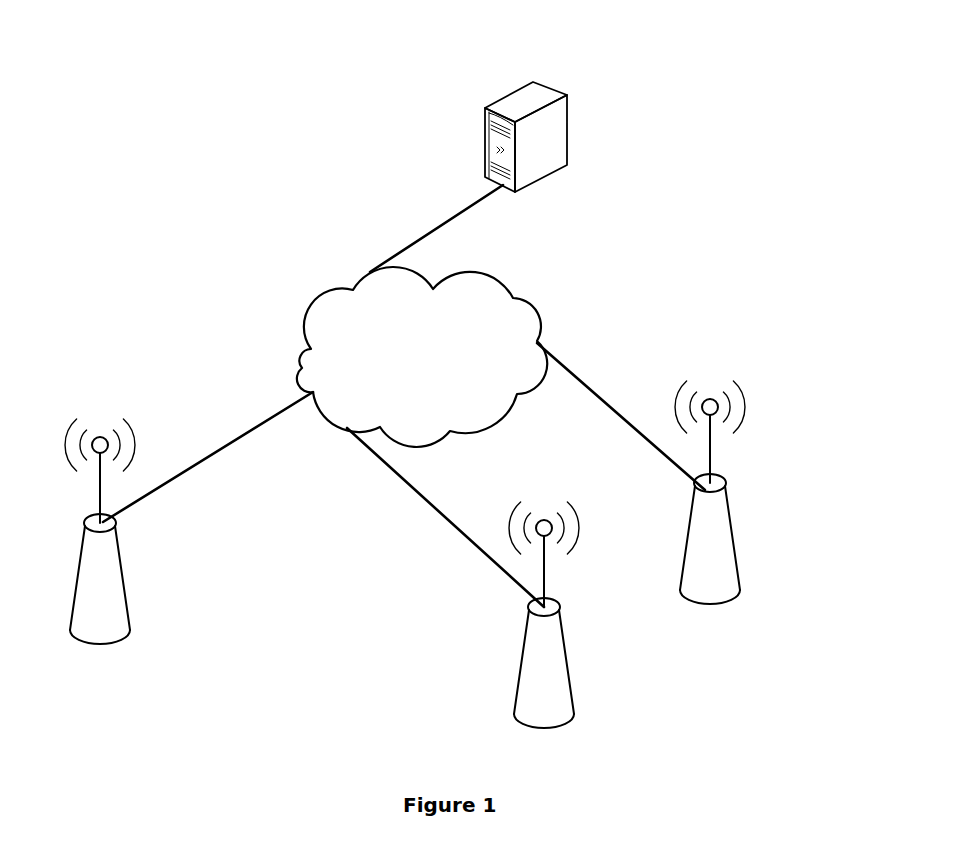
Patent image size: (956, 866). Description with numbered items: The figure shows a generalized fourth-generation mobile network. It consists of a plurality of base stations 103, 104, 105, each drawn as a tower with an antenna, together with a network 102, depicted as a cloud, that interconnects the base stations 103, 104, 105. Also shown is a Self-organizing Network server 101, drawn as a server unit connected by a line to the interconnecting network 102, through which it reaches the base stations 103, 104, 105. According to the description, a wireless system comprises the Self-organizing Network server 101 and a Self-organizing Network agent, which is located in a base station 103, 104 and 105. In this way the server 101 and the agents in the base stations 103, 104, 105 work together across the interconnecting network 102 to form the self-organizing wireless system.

The Self-organizing Network (SON) server 101 is at (552, 90).
The network 102 is at (517, 298).
The base station (BS) 103 is at (130, 597).
The base station (BS) 104 is at (572, 700).
The base station (BS) 105 is at (738, 568).